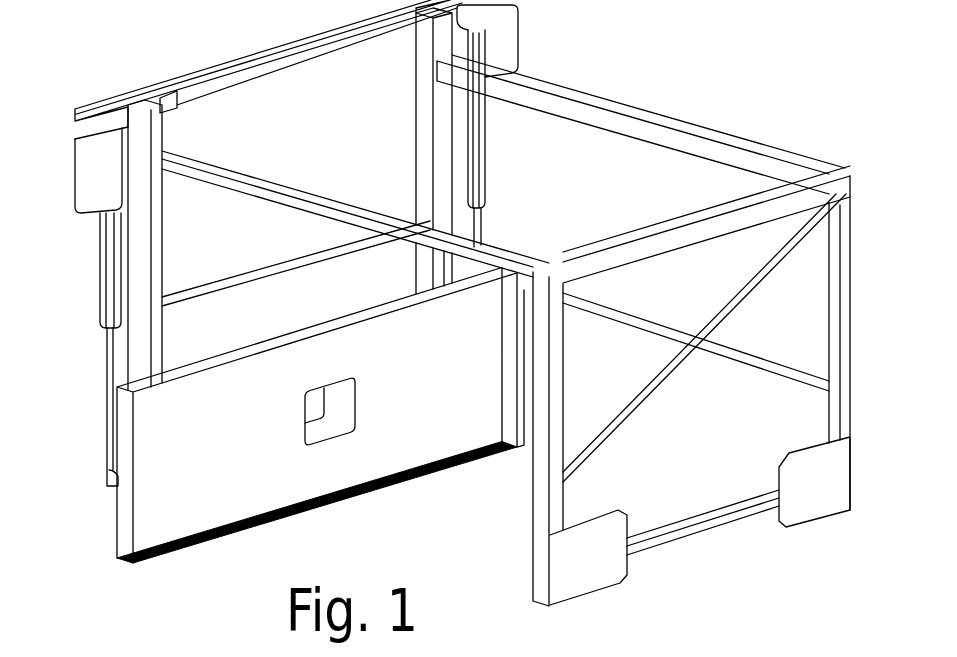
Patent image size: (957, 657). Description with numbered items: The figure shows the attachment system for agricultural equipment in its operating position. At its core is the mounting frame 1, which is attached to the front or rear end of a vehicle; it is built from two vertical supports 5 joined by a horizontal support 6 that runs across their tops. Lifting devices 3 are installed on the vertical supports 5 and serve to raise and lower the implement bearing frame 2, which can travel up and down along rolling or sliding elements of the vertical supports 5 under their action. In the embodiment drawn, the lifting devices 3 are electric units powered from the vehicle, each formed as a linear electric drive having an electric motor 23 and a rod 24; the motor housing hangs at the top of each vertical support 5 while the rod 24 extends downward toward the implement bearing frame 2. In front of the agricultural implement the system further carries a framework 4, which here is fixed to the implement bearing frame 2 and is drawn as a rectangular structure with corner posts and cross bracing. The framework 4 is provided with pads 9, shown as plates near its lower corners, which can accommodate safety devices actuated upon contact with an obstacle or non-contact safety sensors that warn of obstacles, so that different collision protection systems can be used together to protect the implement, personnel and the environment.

The mounting frame 1 is at (182, 330).
The implement bearing frame 2 is at (145, 508).
The lifting device 3 is at (107, 263).
The framework 4 is at (842, 288).
The vertical support 5 is at (140, 242).
The horizontal support 6 is at (287, 70).
The pad 9 is at (808, 485).
The electric motor 23 is at (100, 172).
The rod 24 is at (110, 418).